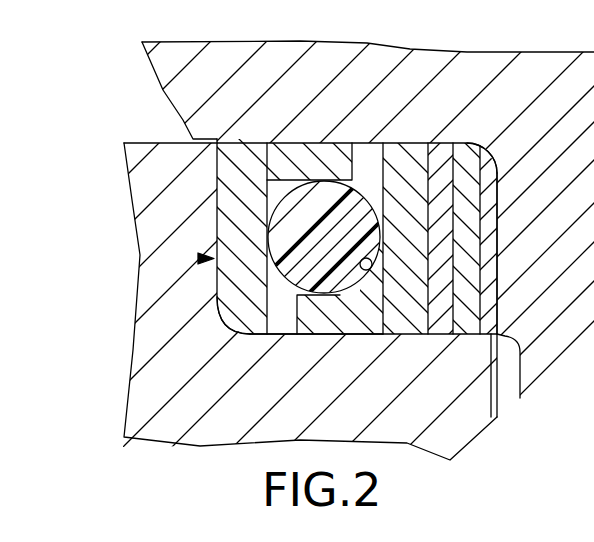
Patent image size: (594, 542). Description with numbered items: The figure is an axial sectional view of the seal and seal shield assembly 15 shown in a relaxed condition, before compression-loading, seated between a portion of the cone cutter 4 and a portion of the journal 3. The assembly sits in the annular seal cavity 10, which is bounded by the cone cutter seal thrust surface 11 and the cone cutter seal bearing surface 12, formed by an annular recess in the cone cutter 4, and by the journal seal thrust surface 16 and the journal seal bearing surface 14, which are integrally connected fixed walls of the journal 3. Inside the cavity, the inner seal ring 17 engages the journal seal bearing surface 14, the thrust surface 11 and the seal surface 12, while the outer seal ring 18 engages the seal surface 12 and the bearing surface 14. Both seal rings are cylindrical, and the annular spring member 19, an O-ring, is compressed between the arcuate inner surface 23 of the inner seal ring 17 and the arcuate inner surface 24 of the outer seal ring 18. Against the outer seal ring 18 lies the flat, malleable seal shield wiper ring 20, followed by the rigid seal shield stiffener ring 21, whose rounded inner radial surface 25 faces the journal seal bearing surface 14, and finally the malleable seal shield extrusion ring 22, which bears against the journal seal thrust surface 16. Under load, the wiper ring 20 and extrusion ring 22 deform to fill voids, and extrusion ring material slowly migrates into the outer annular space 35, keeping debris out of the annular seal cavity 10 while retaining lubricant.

The journal 3 is at (172, 100).
The cone cutter 4 is at (192, 438).
The annular seal cavity 10 is at (287, 320).
The cone cutter seal thrust surface 11 is at (212, 288).
The cone cutter seal bearing surface 12 is at (268, 335).
The journal seal bearing surface 14 is at (345, 142).
The seal and seal shield assembly 15 is at (200, 258).
The journal seal thrust surface 16 is at (498, 217).
The inner seal ring 17 is at (235, 153).
The outer seal ring 18 is at (397, 335).
The annular spring member 19 is at (321, 275).
The seal shield wiper ring 20 is at (435, 323).
The seal shield stiffener ring 21 is at (466, 323).
The seal shield extrusion ring 22 is at (488, 258).
The arcuate inner surface of inner seal ring 23 is at (285, 196).
The arcuate inner surface of outer seal ring 24 is at (371, 269).
The rounded inner radial surface 25 is at (475, 153).
The outer annular space 35 is at (503, 380).